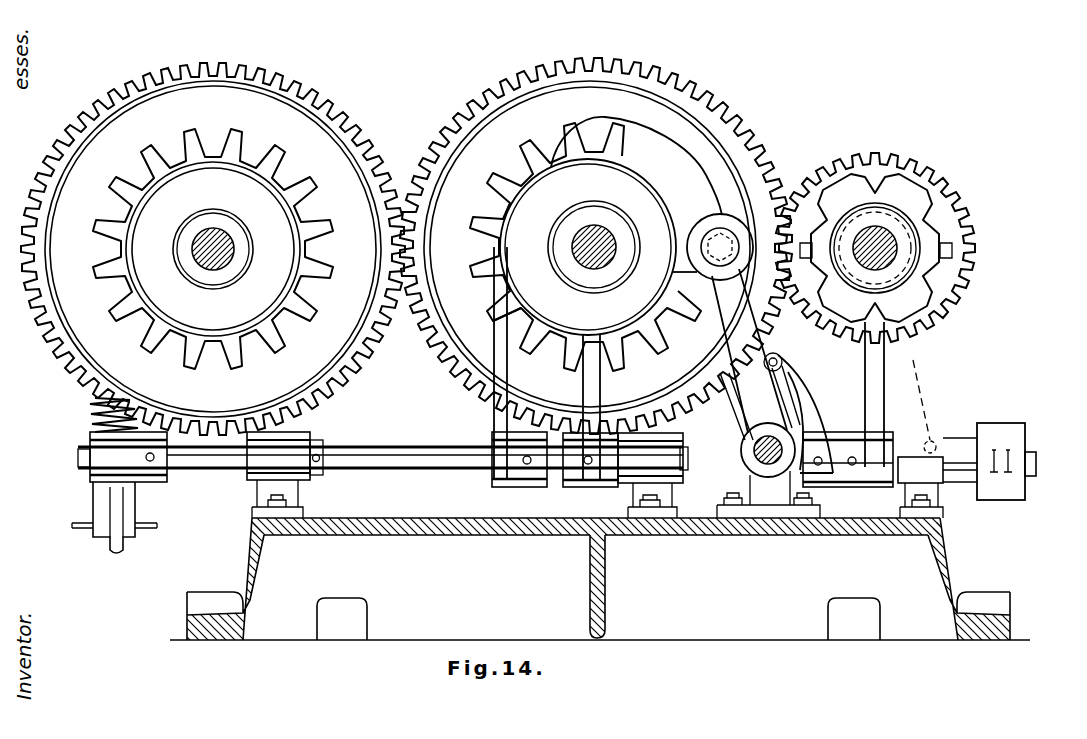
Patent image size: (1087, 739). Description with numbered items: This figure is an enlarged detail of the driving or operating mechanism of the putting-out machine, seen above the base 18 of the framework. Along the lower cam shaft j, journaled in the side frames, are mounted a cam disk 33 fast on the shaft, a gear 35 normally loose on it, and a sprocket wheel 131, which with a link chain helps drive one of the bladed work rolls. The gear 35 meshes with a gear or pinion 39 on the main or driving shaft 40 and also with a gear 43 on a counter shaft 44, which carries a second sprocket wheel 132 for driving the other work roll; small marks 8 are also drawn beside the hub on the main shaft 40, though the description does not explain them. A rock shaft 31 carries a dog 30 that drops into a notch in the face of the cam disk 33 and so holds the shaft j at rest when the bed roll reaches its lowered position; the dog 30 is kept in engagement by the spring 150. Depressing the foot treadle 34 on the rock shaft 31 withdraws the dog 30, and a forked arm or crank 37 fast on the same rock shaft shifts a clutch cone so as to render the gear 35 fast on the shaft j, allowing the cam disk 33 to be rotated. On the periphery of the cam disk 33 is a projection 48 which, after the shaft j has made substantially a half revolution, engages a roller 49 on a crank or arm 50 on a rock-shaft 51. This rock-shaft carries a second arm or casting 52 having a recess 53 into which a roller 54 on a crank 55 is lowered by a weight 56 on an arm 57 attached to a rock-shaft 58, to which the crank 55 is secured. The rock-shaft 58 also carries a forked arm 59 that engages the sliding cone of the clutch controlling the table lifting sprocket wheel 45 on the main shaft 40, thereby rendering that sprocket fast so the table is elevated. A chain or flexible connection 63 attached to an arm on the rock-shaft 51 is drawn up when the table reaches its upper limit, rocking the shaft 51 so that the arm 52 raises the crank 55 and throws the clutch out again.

The gear 43 is at (337, 113).
The sprocket wheel 132 is at (320, 251).
The counter shaft 44 is at (228, 243).
The gear 35 is at (464, 108).
The cam disk 33 is at (476, 220).
The sprocket wheel 131 is at (480, 283).
The projection 48 is at (679, 148).
The cam shaft j is at (604, 257).
The roller 49 is at (723, 226).
The crank or arm 50 is at (733, 331).
The rock-shaft 51 is at (748, 456).
The second arm or casting 52 is at (737, 412).
The recess 53 is at (775, 397).
The roller 54 is at (780, 357).
The crank 55 is at (819, 400).
The dog 30 is at (493, 417).
The forked arm or crank 37 is at (583, 390).
The rock-shaft 31 is at (379, 447).
The spring 150 is at (90, 415).
The foot treadle 34 is at (136, 506).
The gear or pinion 39 is at (970, 251).
The sprocket wheel 45 is at (956, 286).
The main or driving shaft 40 is at (889, 236).
The key 8 is at (876, 250).
The forked arm 59 is at (885, 380).
The chain or flexible connection 63 is at (926, 394).
The weight 56 is at (1025, 432).
The arm 57 is at (1002, 473).
The rock-shaft 58 is at (1036, 478).
The base 18 is at (452, 535).